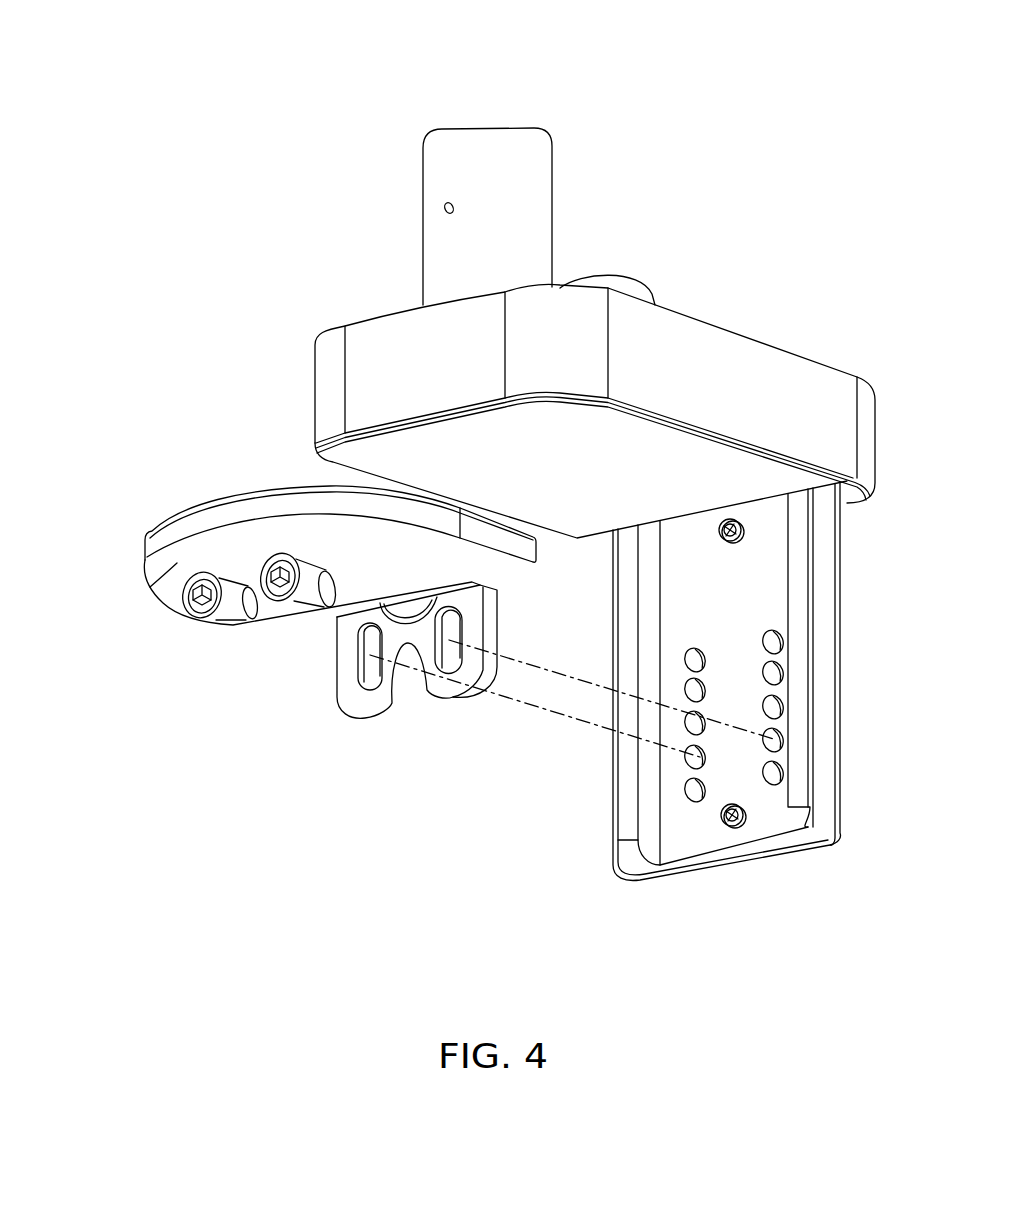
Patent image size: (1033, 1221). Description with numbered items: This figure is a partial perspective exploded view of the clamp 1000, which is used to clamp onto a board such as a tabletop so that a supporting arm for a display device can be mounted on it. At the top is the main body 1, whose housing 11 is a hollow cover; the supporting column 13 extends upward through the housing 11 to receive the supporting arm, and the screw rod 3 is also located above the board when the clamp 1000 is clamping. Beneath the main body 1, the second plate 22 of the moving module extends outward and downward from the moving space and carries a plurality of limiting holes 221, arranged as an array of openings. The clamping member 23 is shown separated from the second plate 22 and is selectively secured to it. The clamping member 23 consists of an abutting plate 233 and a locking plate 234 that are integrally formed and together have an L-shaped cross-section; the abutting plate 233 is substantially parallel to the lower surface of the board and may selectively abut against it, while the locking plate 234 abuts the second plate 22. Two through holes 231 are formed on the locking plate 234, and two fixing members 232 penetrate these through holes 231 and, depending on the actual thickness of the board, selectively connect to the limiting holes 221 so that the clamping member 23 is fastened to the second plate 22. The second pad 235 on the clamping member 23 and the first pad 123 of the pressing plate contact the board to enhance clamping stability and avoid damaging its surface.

The clamp 1000 is at (276, 31).
The main body 1 is at (343, 268).
The housing 11 is at (767, 360).
The supporting column 13 is at (436, 172).
The screw rod 3 is at (645, 303).
The second plate 22 is at (772, 582).
The limiting holes 221 is at (690, 660).
The first pad 123 is at (753, 487).
The clamping member 23 is at (112, 520).
The second pad 235 is at (177, 510).
The abutting plate 233 is at (150, 587).
The fixing members 232 is at (233, 625).
The locking plate 234 is at (343, 697).
The through holes 231 is at (368, 690).